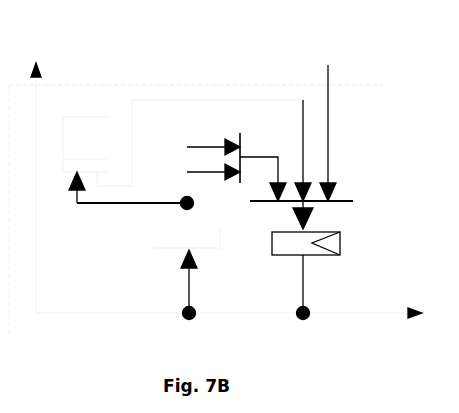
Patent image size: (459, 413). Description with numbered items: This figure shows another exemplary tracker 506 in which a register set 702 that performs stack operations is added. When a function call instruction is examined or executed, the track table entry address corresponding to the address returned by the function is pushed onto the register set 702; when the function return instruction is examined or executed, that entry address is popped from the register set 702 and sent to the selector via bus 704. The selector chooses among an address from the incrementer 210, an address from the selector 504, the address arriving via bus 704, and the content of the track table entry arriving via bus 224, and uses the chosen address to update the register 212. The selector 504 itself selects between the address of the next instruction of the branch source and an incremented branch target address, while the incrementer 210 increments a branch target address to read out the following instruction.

The bus 704 is at (145, 100).
The selector 504 is at (242, 133).
The bus 224 is at (332, 67).
The tracker 506 is at (355, 88).
The register set 702 is at (68, 172).
The incrementer 210 is at (178, 252).
The register 212 is at (283, 255).